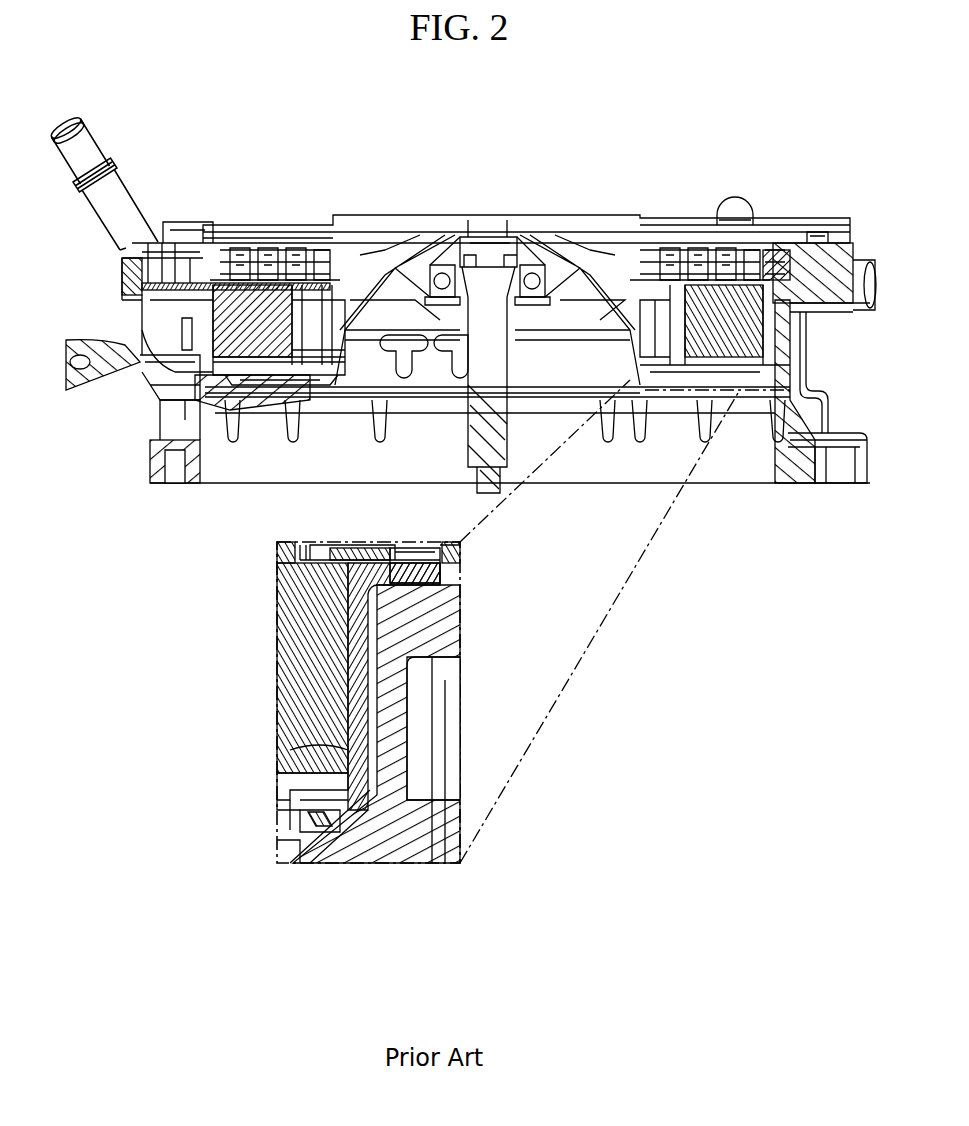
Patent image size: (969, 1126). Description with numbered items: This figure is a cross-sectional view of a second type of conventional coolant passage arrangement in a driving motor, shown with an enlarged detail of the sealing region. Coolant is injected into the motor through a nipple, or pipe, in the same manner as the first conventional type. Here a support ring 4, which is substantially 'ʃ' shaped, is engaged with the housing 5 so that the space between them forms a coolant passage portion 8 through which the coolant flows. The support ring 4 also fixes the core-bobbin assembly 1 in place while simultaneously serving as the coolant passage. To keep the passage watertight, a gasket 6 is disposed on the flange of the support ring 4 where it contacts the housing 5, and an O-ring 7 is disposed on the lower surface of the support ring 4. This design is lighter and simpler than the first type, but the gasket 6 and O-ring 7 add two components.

The core-bobbin assembly 1 is at (292, 676).
The support ring 4 is at (318, 745).
The housing 5 is at (384, 830).
The gasket 6 is at (410, 575).
The O-ring 7 is at (300, 826).
The coolant passage portion 8 is at (360, 636).